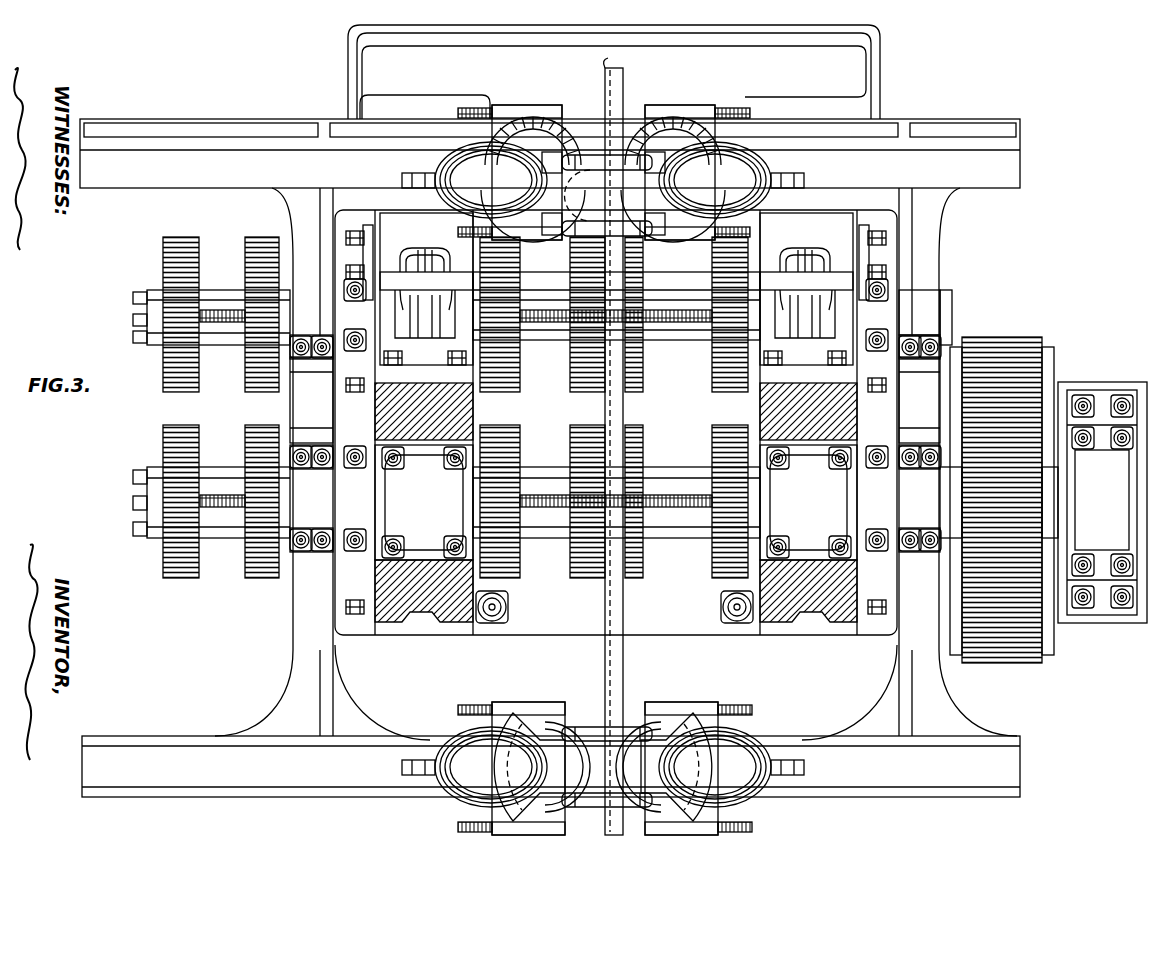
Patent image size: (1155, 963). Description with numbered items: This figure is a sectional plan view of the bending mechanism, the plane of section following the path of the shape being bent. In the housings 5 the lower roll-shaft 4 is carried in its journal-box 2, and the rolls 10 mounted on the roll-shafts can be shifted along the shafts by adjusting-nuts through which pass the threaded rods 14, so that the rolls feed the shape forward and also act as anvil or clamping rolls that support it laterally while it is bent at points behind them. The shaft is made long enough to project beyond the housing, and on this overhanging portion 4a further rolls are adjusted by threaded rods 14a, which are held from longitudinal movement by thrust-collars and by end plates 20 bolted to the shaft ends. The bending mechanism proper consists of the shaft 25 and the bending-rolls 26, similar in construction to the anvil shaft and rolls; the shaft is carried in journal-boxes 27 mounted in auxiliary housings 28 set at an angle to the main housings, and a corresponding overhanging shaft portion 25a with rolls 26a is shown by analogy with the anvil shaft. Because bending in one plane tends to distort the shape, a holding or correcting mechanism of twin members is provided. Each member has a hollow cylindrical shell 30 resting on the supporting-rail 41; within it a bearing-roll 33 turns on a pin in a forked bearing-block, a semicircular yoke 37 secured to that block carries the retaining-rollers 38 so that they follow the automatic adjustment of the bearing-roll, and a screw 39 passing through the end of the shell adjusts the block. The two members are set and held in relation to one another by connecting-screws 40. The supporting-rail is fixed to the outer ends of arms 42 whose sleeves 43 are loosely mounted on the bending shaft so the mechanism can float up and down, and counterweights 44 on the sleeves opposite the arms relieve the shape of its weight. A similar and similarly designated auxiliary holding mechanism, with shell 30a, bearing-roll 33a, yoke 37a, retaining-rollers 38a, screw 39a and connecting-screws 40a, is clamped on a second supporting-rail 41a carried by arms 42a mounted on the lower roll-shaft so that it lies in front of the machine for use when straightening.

The journal-box 2 is at (616, 502).
The roll-shaft 4 is at (546, 467).
The overhanging portion of roll-shaft 4a is at (215, 467).
The housings 5 is at (380, 412).
The rolls 10 is at (245, 572).
The threaded rods 14 is at (222, 310).
The threaded rods 14a is at (230, 507).
The end plates 20 is at (140, 292).
The shaft 25 is at (546, 290).
The upper rack shaft extension 25a is at (228, 345).
The rolls 26 is at (570, 366).
The upper gear extension 26a is at (246, 246).
The journal-boxes 27 is at (785, 318).
The auxiliary housings 28 is at (616, 285).
The hollow cylindrical shell 30 is at (603, 180).
The lower clutch ring 30a is at (603, 767).
The bearing-roll 33 is at (542, 125).
The lower toothed sector 33a is at (656, 772).
The semicircular yoke 37 is at (548, 173).
The lower fork 37a is at (672, 745).
The retaining-rollers 38 is at (606, 155).
The lower pin bar 38a is at (640, 760).
The screw 39 is at (404, 175).
The lower adjusting screw 39a is at (806, 767).
The connecting-screws 40 is at (578, 118).
The lower plate 40a is at (583, 702).
The supporting-rail 41 is at (290, 119).
The supporting-rail 41a is at (322, 797).
The arms 42 is at (616, 419).
The arms 42a is at (290, 656).
The sleeves 43 is at (615, 421).
The counterweights 44 is at (290, 410).